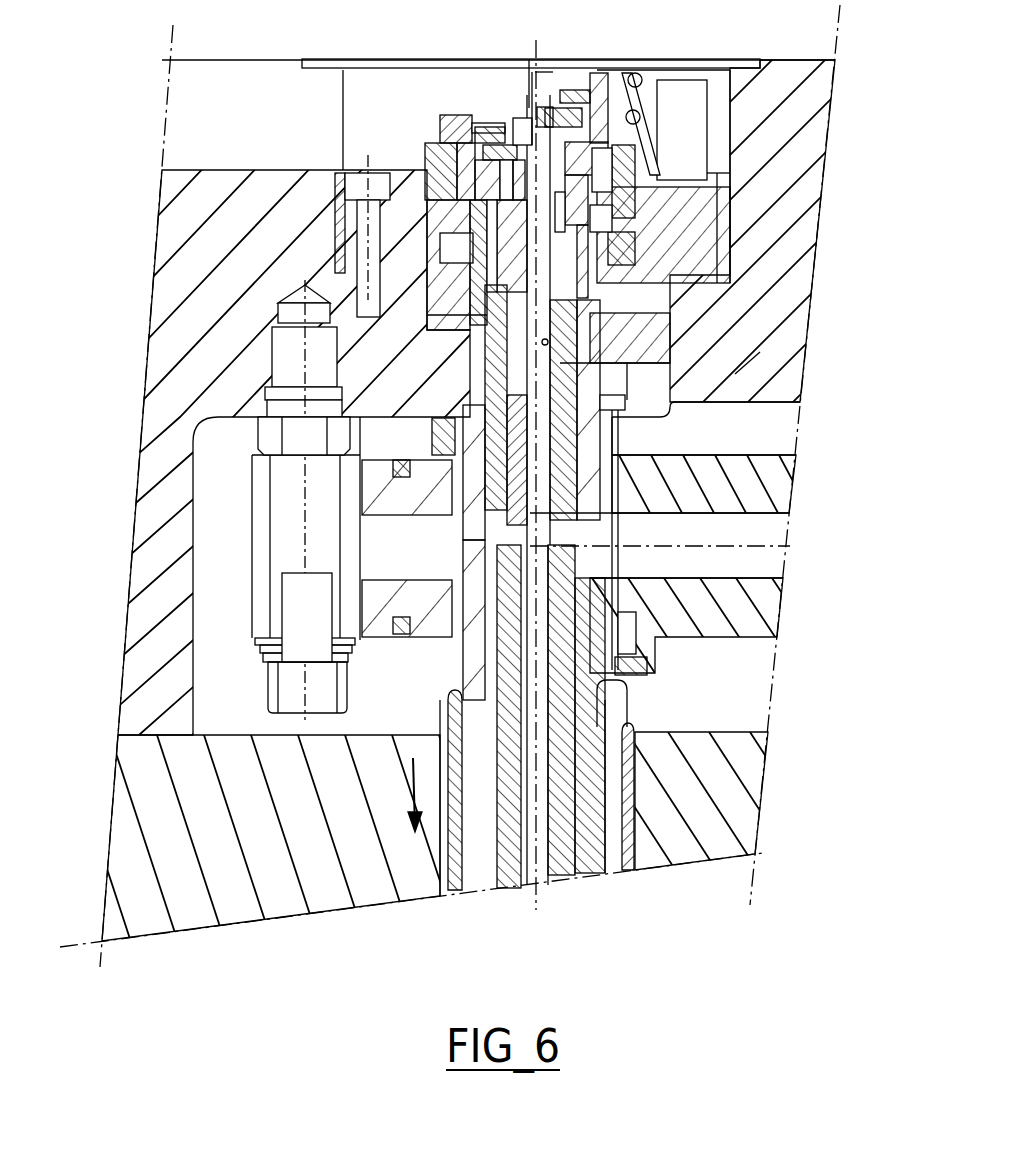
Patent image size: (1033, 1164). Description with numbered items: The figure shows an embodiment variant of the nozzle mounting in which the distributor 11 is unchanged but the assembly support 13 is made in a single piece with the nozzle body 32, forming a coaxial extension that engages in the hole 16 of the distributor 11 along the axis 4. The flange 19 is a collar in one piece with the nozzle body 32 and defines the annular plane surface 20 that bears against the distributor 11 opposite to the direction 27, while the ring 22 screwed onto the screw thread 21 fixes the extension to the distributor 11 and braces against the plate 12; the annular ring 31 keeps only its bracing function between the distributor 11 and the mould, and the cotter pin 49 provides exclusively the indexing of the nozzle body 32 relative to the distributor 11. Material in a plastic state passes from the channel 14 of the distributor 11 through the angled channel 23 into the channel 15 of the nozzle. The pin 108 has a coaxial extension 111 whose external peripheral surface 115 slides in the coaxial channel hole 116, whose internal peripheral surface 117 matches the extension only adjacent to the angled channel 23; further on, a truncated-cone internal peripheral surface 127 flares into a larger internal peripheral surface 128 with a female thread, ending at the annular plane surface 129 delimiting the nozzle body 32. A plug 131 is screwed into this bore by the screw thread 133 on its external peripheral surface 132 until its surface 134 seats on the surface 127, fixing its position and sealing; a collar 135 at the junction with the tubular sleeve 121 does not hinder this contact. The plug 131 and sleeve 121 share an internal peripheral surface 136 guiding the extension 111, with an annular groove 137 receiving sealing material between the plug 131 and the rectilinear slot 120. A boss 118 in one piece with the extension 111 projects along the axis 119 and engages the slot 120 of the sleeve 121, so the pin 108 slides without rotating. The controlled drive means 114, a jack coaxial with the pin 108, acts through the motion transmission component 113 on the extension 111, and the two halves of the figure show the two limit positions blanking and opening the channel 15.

The axis 4 is at (592, 825).
The distributor 11 is at (797, 487).
The plate 12 is at (825, 304).
The assembly support 13 is at (612, 592).
The channel 14 is at (772, 563).
The channel 15 is at (565, 742).
The hole 16 is at (445, 672).
The flange 19 is at (440, 695).
The plane surface 20 is at (447, 600).
The screw thread 21 is at (437, 424).
The ring 22 is at (393, 458).
The angled channel 23 is at (585, 570).
The direction 27 is at (405, 790).
The annular ring 31 is at (652, 667).
The nozzle body 32 is at (455, 852).
The cotter pin 49 is at (640, 623).
The pin 108 is at (548, 780).
The coaxial extension 111 is at (627, 546).
The motion transmission component 113 is at (483, 118).
The controlled drive means 114 is at (427, 247).
The external peripheral surface 115 is at (628, 622).
The coaxial channel hole 116 is at (700, 447).
The internal peripheral surface 117 is at (470, 535).
The boss 118 is at (707, 212).
The axis 119 is at (703, 250).
The rectilinear slot 120 is at (580, 290).
The tubular sleeve 121 is at (762, 360).
The internal peripheral surface 127 is at (550, 465).
The internal peripheral surface 128 is at (515, 492).
The annular plane surface 129 is at (470, 408).
The plug 131 is at (627, 427).
The external peripheral surface 132 is at (612, 480).
The screw thread 133 is at (447, 478).
The surface 134 is at (552, 468).
The collar 135 is at (606, 393).
The internal peripheral surface 136 is at (550, 342).
The groove 137 is at (477, 330).